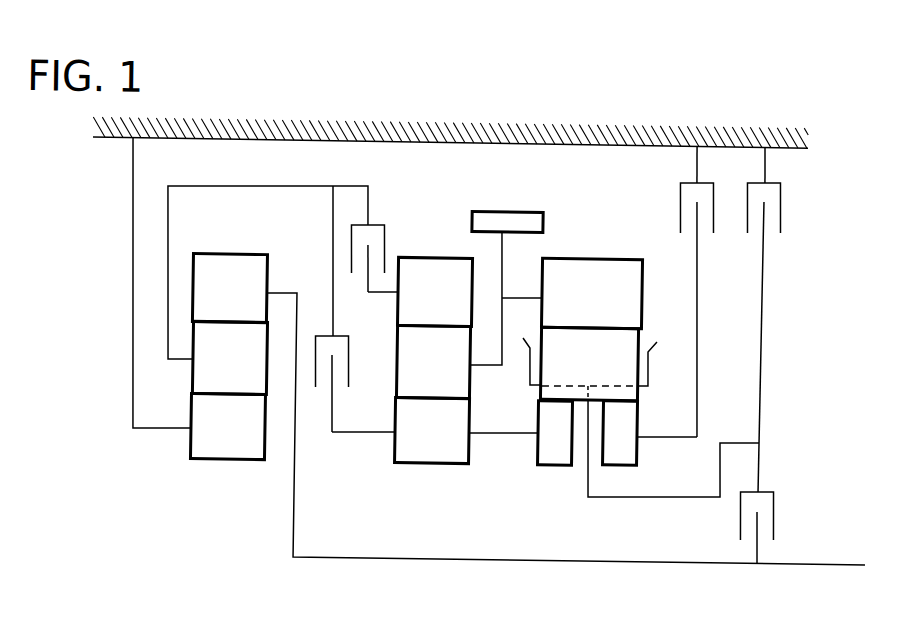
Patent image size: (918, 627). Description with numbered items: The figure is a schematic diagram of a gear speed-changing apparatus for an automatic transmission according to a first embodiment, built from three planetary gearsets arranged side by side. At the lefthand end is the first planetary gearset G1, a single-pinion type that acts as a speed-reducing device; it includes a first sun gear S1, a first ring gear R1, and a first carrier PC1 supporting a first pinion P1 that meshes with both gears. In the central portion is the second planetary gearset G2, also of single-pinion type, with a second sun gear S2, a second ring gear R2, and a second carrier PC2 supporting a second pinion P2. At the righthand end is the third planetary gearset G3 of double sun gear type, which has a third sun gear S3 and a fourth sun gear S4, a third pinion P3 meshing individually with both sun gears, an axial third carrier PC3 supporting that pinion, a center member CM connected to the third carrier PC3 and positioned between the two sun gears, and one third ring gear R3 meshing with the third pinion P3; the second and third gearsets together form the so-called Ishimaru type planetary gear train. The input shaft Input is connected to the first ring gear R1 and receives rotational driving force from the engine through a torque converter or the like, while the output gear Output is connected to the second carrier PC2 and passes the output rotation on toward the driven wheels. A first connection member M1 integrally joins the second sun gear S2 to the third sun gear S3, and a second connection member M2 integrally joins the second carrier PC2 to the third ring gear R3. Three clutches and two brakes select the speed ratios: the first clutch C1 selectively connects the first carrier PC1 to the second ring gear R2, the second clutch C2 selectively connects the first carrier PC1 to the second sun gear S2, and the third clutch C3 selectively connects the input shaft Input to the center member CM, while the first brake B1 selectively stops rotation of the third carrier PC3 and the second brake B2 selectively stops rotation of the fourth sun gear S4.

The first planetary gearset G1 is at (246, 247).
The first ring gear R1 is at (229, 287).
The first pinion P1 is at (229, 357).
The first sun gear S1 is at (227, 426).
The first carrier PC1 is at (177, 364).
The second planetary gearset G2 is at (454, 247).
The second ring gear R2 is at (434, 291).
The second pinion P2 is at (433, 361).
The second sun gear S2 is at (432, 430).
The second carrier PC2 is at (486, 366).
The third planetary gearset G3 is at (609, 248).
The third ring gear R3 is at (591, 293).
The third pinion P3 is at (589, 364).
The third sun gear S3 is at (555, 433).
The fourth sun gear S4 is at (620, 433).
The third carrier PC3 is at (658, 339).
The first clutch C1 is at (379, 242).
The second clutch C2 is at (356, 309).
The third clutch C3 is at (767, 514).
The first brake B1 is at (781, 320).
The second brake B2 is at (676, 291).
The first connection member M1 is at (504, 436).
The second connection member M2 is at (501, 322).
The center member CM is at (653, 496).
The output gear Output is at (503, 205).
The input shaft Input is at (565, 444).